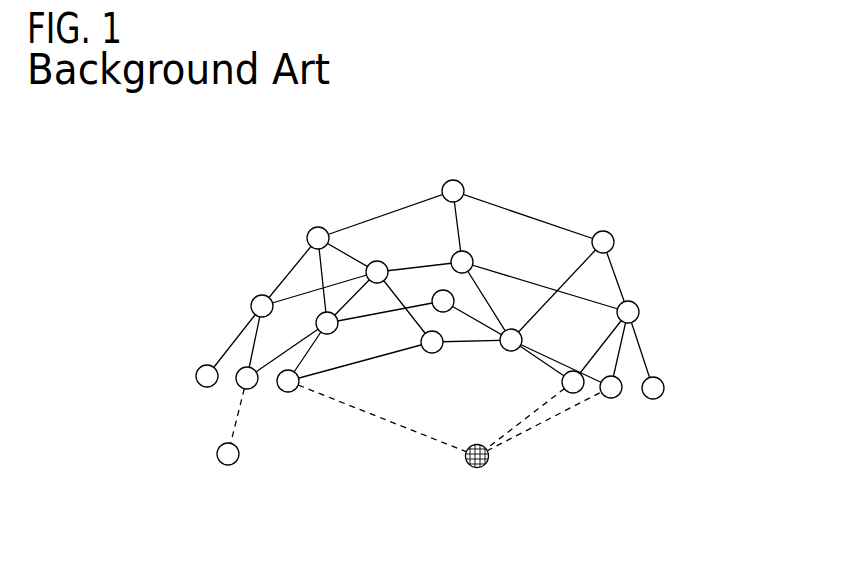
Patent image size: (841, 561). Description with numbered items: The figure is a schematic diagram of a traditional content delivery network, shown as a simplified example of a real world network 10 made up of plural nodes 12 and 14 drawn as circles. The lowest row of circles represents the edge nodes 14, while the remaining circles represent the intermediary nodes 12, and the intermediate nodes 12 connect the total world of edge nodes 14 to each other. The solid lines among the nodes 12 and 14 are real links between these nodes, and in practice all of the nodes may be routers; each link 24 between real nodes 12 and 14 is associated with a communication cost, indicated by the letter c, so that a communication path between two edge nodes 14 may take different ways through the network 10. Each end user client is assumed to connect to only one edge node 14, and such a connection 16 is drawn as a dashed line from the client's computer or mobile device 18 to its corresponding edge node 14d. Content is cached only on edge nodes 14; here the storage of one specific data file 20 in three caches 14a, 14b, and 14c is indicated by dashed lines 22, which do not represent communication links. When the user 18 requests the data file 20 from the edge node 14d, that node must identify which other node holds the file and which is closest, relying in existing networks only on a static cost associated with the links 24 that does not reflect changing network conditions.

The network 10 is at (472, 73).
The intermediary node 12 is at (461, 181).
The edge node 14 is at (196, 374).
The cache 14a is at (288, 393).
The cache 14b is at (570, 395).
The cache 14c is at (620, 393).
The edge node 14d is at (236, 389).
The connection 16 is at (235, 432).
The client's computer or mobile device 18 is at (218, 459).
The data file 20 is at (477, 467).
The dashed lines 22 is at (540, 428).
The link 24 is at (299, 261).